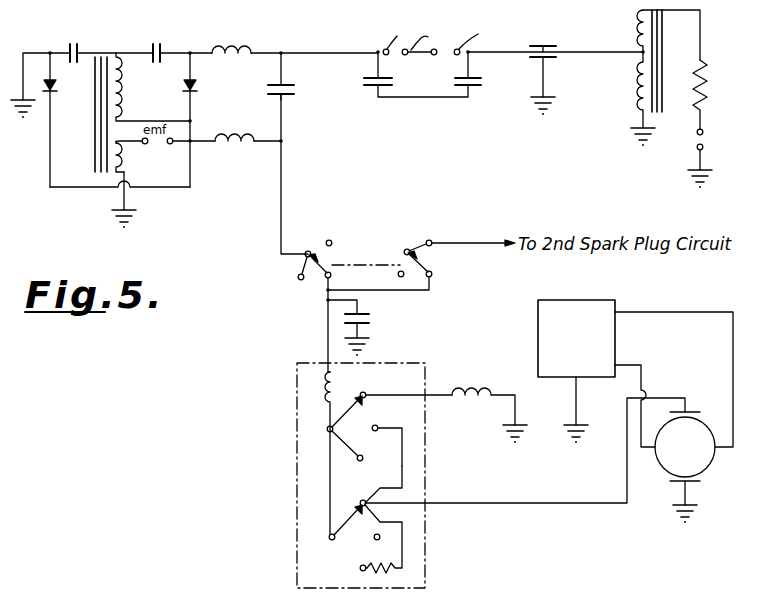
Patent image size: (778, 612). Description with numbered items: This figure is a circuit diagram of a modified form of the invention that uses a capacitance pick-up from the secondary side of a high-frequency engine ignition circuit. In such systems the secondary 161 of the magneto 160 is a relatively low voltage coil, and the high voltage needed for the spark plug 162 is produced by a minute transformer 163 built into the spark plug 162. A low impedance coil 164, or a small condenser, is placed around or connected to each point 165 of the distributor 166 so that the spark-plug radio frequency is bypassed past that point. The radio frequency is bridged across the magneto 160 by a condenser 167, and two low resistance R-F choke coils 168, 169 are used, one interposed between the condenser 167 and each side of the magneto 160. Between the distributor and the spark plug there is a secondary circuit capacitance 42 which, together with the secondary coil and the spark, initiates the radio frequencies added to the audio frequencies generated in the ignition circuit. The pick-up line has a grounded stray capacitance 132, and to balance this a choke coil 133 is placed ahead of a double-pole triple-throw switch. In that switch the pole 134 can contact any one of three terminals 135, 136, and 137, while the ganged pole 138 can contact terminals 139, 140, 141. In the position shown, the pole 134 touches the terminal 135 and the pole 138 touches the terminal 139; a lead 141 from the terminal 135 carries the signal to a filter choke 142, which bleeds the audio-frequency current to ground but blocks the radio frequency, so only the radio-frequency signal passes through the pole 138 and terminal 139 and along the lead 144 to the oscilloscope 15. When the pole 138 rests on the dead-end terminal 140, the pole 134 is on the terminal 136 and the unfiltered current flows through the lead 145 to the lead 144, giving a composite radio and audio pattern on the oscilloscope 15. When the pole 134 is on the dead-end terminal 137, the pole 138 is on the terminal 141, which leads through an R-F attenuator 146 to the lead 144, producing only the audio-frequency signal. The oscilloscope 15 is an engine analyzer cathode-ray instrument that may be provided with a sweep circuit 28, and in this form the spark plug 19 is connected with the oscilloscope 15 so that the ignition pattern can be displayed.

The engine analyzer cathode-ray oscilloscope 15 is at (701, 464).
The spark plug electrode 19 is at (690, 412).
The sweep circuit 28 is at (585, 304).
The secondary circuit capacitance 42 is at (318, 258).
The grounded stray capacitance 132 is at (373, 328).
The choke coil 133 is at (325, 387).
The pole 134 is at (352, 399).
The terminal 135 is at (368, 394).
The terminal 136 is at (379, 425).
The dead-end terminal 137 is at (364, 458).
The pole 138 is at (353, 515).
The terminal 139 is at (369, 503).
The dead-end terminal 140 is at (380, 539).
The terminal 141 is at (433, 394).
The filter choke 142 is at (462, 401).
The lead 144 is at (492, 504).
The lead 145 is at (403, 464).
The R-F attenuator 146 is at (380, 572).
The magneto 160 is at (94, 128).
The secondary 161 is at (127, 94).
The spark plug 162 is at (707, 141).
The transformer 163 is at (636, 33).
The low impedance coil 164 is at (383, 88).
The point 165 is at (395, 35).
The distributor 166 is at (427, 36).
The condenser 167 is at (294, 90).
The R-F choke coil 168 is at (236, 48).
The R-F choke coil 169 is at (232, 135).